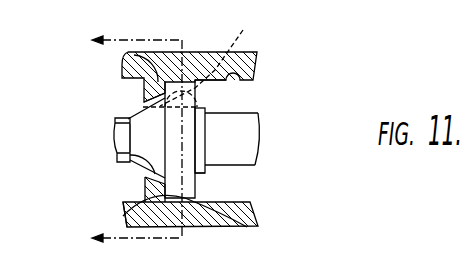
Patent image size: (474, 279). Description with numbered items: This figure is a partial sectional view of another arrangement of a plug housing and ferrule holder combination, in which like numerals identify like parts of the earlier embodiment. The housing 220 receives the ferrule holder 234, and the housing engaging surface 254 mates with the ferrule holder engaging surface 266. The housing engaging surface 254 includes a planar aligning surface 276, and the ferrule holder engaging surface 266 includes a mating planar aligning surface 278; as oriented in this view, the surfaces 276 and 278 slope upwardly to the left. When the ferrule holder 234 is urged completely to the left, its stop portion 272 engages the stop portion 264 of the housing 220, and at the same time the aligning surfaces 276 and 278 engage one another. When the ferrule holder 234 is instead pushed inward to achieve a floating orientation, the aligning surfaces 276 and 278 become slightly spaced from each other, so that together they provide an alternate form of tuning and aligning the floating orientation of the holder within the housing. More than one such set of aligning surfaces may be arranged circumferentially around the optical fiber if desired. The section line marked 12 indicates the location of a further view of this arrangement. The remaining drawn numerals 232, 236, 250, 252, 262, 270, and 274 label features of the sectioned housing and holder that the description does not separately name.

The section line 12- 12 is at (123, 137).
The housing 220 is at (212, 52).
The clamp 232 is at (113, 118).
The ferrule holder 234 is at (206, 180).
The nut body end 236 is at (255, 166).
The upper plate 250 is at (259, 54).
The lower surface of upper plate 252 is at (252, 101).
The housing engaging surface 254 is at (163, 98).
The bolt axis 262 is at (188, 52).
The stop portion 264 is at (123, 59).
The ferrule holder engaging surface 266 is at (140, 137).
The hidden spherical seat 270 is at (207, 56).
The stop portion 272 is at (187, 140).
The nut body 274 is at (205, 160).
The planar aligning surface 276 is at (123, 216).
The mating planar aligning surface 278 is at (247, 227).